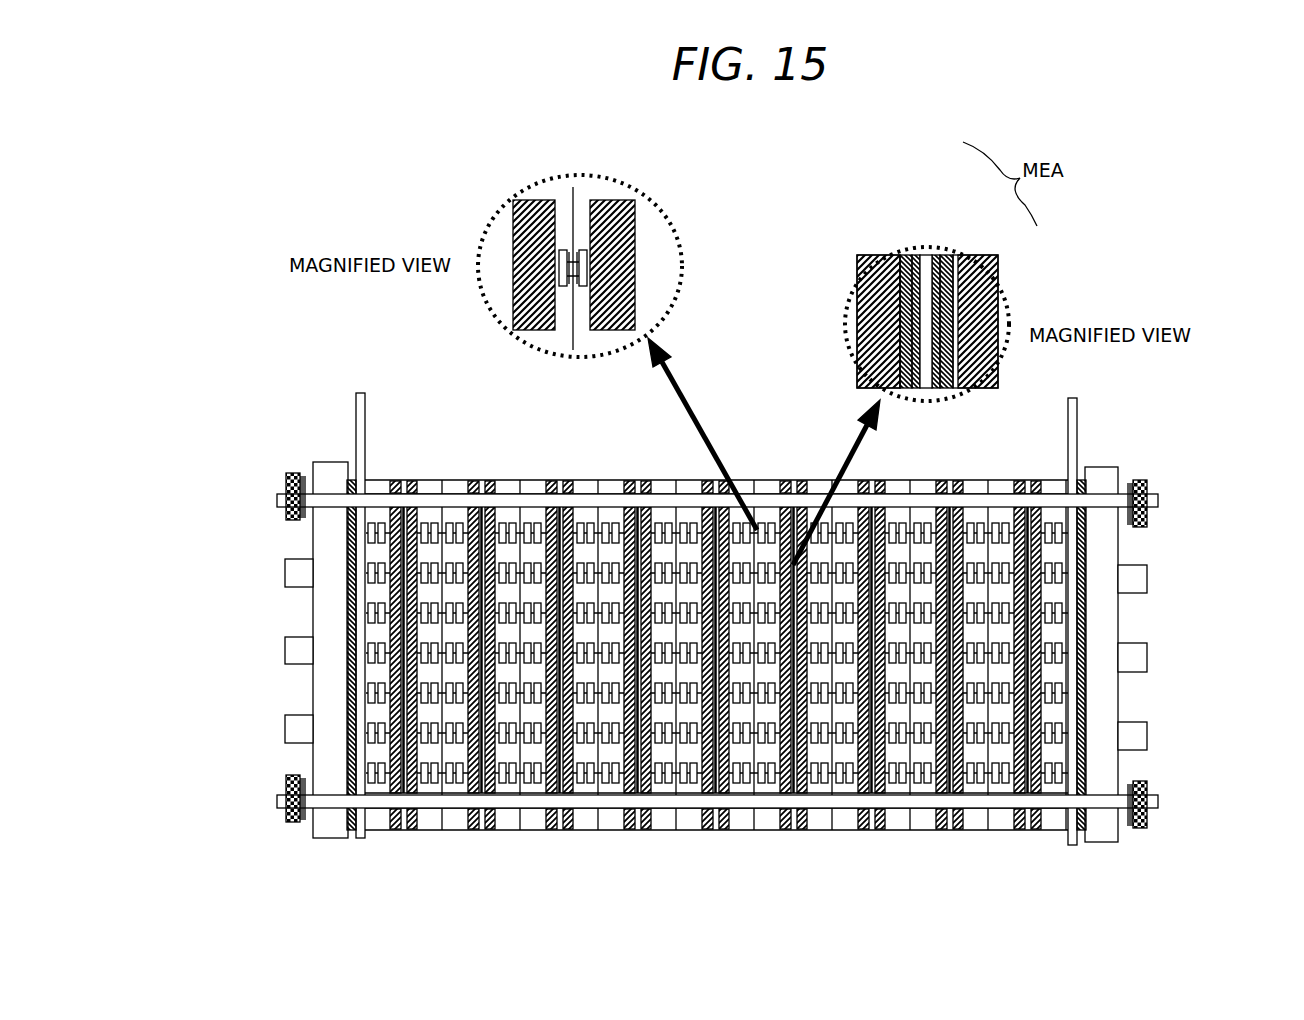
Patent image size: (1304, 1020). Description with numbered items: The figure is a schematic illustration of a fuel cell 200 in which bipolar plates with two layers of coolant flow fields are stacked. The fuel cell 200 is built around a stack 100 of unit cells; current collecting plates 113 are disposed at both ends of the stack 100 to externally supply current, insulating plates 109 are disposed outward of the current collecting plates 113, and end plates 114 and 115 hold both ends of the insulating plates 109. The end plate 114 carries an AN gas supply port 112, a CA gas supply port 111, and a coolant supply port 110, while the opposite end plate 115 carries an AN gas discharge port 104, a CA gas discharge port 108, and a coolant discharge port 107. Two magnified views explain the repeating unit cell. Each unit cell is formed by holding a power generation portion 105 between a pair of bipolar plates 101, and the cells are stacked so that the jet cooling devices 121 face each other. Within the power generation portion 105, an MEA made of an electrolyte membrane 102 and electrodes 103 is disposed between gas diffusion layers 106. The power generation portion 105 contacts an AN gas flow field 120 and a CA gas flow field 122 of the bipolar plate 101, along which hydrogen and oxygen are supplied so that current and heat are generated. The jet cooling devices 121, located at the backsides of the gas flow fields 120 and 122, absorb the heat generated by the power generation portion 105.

The stack 100 is at (1062, 472).
The bipolar plate 101 is at (573, 352).
The electrolyte membrane 102 is at (926, 255).
The electrodes 103 is at (906, 255).
The AN gas discharge port 104 is at (1142, 579).
The power generation portion 105 is at (1003, 305).
The gas diffusion layers 106 is at (857, 330).
The coolant discharge port 107 is at (1142, 736).
The CA gas discharge port 108 is at (1142, 658).
The insulating plates 109 is at (318, 470).
The coolant supply port 110 is at (290, 729).
The CA gas supply port 111 is at (290, 651).
The AN gas supply port 112 is at (290, 573).
The current collecting plates 113 is at (357, 405).
The end plate 114 is at (323, 826).
The end plate 115 is at (1110, 835).
The AN gas flow field 120 is at (552, 196).
The jet cooling devices 121 is at (580, 248).
The CA gas flow field 122 is at (632, 336).
The fuel cell 200 is at (385, 850).